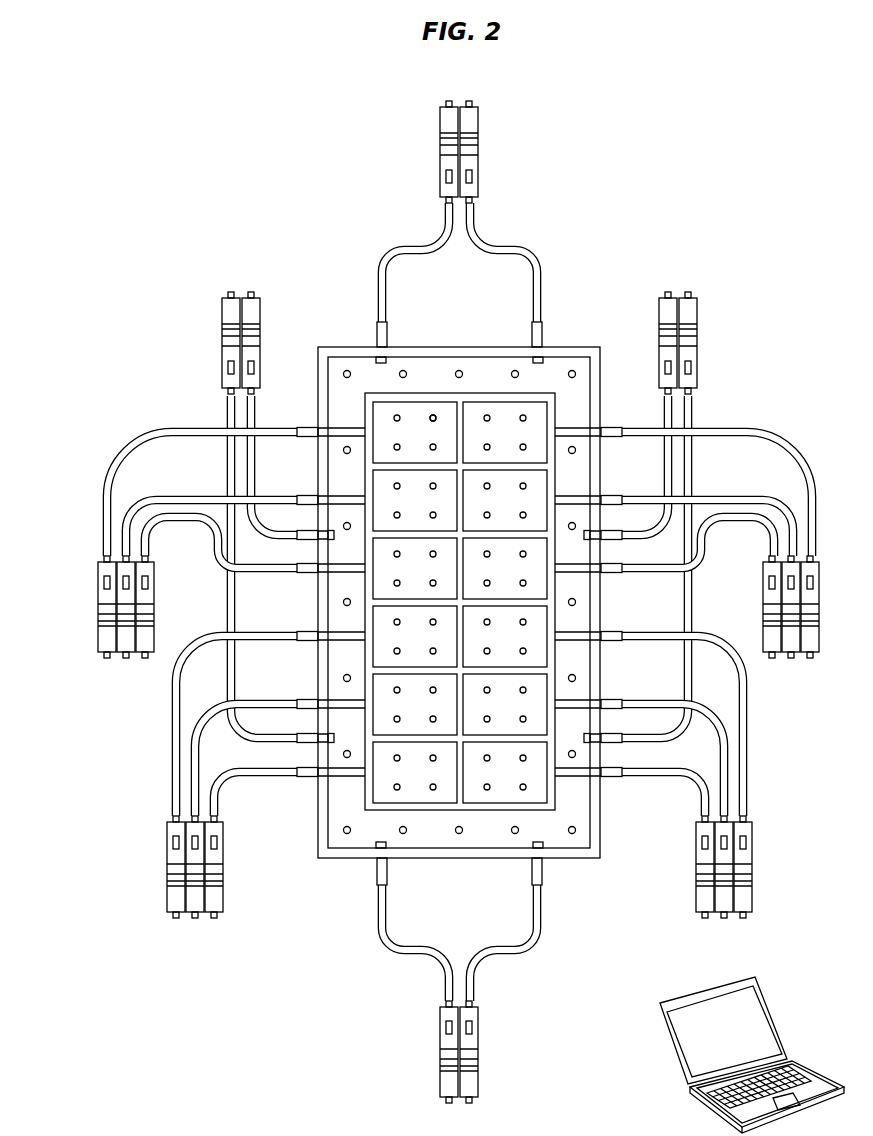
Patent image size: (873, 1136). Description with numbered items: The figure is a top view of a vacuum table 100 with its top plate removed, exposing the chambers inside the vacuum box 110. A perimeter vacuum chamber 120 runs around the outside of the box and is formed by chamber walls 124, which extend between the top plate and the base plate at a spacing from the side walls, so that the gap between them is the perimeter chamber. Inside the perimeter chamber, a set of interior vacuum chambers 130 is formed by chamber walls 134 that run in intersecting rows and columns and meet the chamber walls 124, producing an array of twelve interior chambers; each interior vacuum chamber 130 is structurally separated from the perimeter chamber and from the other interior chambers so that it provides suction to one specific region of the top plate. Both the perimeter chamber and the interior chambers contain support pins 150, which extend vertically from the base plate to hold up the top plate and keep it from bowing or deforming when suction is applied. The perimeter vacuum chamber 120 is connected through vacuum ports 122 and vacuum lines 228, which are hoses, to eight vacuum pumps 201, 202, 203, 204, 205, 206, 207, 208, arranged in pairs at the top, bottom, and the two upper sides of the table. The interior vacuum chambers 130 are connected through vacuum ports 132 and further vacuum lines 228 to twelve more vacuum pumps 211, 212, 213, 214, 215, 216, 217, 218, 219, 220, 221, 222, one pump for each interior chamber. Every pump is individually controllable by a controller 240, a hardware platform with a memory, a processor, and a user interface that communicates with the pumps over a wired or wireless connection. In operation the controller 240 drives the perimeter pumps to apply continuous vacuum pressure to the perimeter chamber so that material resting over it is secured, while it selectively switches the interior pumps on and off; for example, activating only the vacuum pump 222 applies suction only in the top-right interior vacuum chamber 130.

The vacuum table 100 is at (757, 253).
The vacuum box 110 is at (601, 380).
The perimeter vacuum chamber 120 is at (337, 812).
The vacuum port 122 is at (377, 335).
The chamber wall 124 is at (500, 393).
The interior vacuum chamber 130 is at (519, 441).
The vacuum port 132 is at (307, 427).
The chamber wall 134 is at (453, 412).
The support pin 150 is at (343, 370).
The vacuum pump 201 is at (447, 1082).
The vacuum pump 202 is at (470, 1082).
The vacuum pump 203 is at (443, 160).
The vacuum pump 204 is at (475, 163).
The vacuum pump 205 is at (222, 312).
The vacuum pump 206 is at (260, 313).
The vacuum pump 207 is at (659, 312).
The vacuum pump 208 is at (697, 310).
The vacuum pump 211 is at (170, 895).
The vacuum pump 212 is at (195, 919).
The vacuum pump 213 is at (220, 899).
The vacuum pump 214 is at (107, 658).
The vacuum pump 215 is at (126, 658).
The vacuum pump 216 is at (155, 592).
The vacuum pump 217 is at (700, 906).
The vacuum pump 218 is at (723, 919).
The vacuum pump 219 is at (750, 898).
The vacuum pump 220 is at (772, 612).
The vacuum pump 221 is at (791, 658).
The vacuum pump 222 is at (819, 610).
The vacuum line 228 is at (445, 221).
The controller 240 is at (826, 1083).